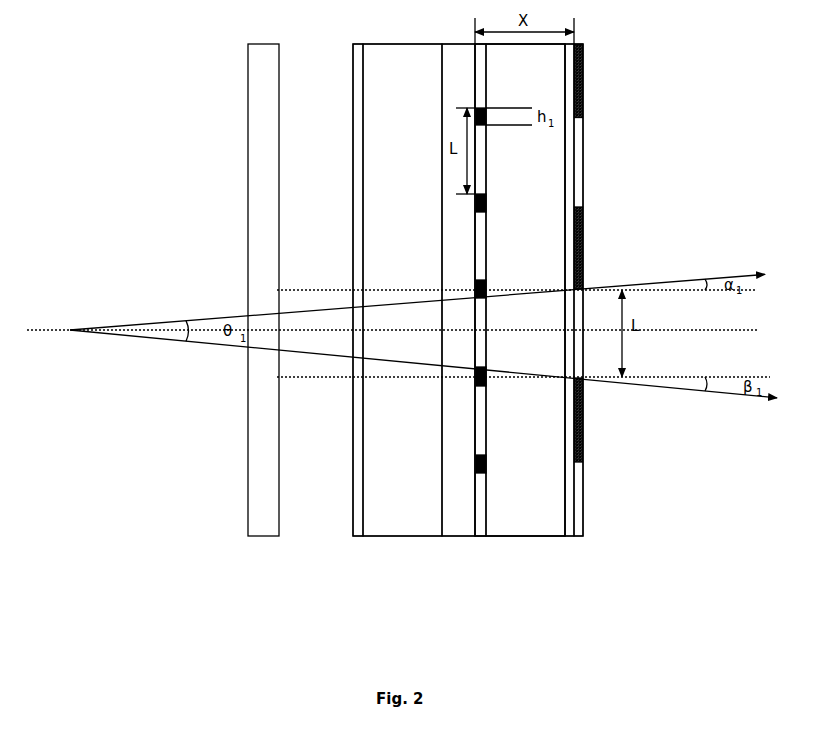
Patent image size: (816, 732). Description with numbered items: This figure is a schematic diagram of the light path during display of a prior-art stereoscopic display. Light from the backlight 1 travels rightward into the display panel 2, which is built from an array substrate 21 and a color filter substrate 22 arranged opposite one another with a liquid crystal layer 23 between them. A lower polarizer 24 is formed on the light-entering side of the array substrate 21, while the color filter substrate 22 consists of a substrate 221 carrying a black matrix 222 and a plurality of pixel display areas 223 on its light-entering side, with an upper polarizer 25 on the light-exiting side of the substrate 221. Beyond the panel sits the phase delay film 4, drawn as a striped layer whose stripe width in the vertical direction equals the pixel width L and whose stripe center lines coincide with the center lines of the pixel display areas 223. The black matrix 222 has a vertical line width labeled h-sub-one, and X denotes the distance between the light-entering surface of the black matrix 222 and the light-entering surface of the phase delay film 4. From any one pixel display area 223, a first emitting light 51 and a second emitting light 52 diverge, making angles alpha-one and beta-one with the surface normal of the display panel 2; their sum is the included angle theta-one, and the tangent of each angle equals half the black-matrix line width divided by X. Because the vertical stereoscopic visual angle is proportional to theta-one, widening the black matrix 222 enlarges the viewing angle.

The backlight 1 is at (258, 528).
The display panel 2 is at (597, 617).
The array substrate 21 is at (405, 528).
The color filter substrate 22 is at (567, 582).
The substrate 221 is at (544, 527).
The black matrix 222 is at (488, 470).
The pixel display areas 223 is at (480, 528).
The liquid crystal layer 23 is at (455, 527).
The lower polarizer 24 is at (357, 528).
The upper polarizer 25 is at (563, 526).
The phase delay film 4 is at (578, 519).
The first emitting light 51 is at (686, 268).
The second emitting light 52 is at (686, 400).